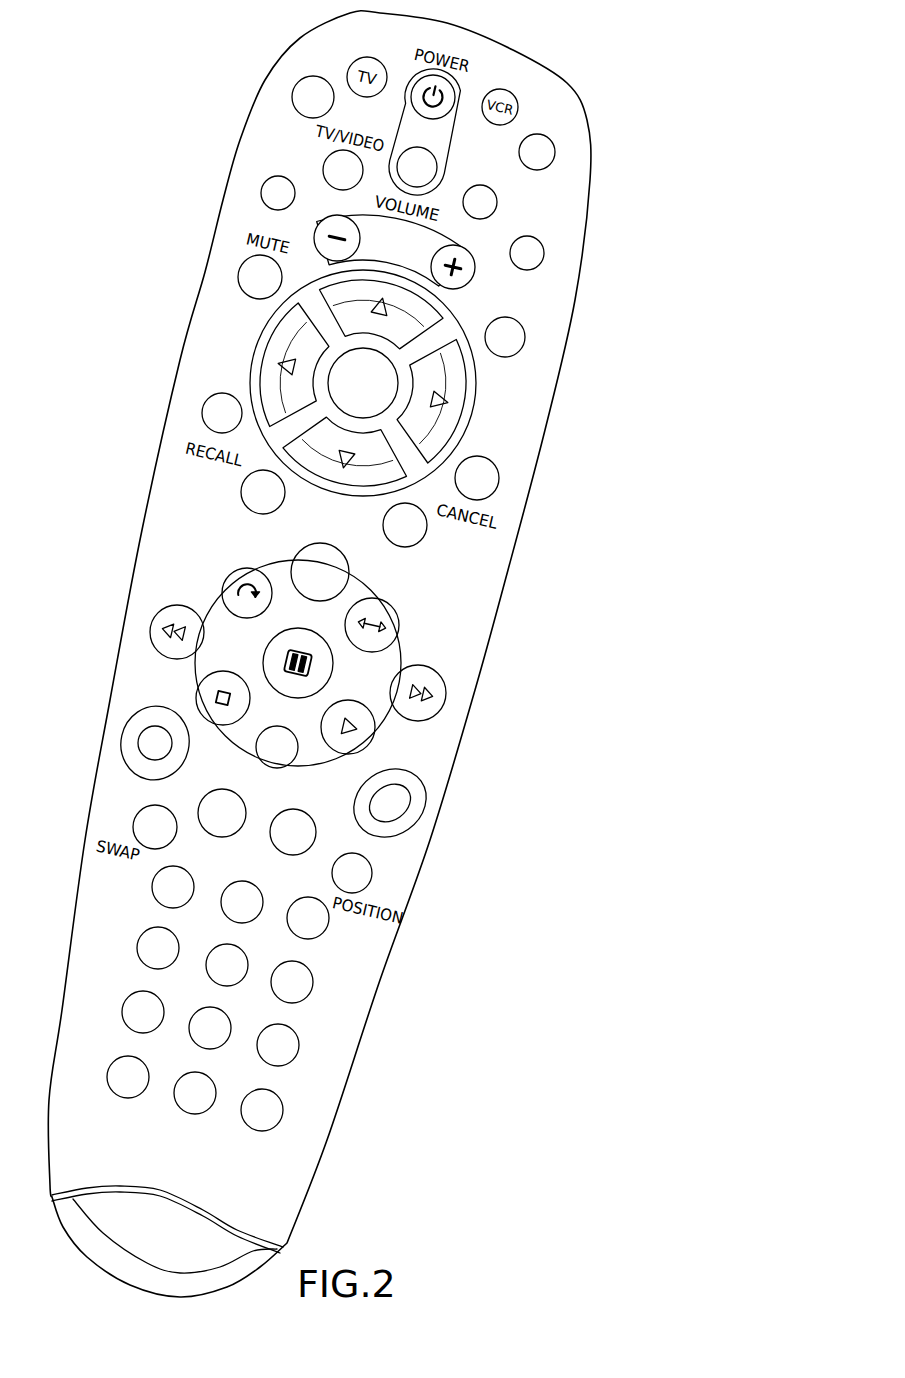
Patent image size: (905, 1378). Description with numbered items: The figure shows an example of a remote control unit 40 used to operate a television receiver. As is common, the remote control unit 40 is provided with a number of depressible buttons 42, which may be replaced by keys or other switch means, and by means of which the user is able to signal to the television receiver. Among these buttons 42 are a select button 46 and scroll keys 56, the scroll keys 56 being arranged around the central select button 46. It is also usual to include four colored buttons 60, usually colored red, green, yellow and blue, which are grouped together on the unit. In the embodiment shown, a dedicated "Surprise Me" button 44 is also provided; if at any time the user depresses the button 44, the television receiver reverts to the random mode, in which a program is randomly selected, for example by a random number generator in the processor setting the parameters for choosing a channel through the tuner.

The remote control unit 40 is at (197, 172).
The depressible buttons 42 is at (282, 1108).
The "Surprise Me" button 44 is at (317, 837).
The select button 46 is at (398, 389).
The scroll keys 56 is at (452, 438).
The colored buttons 60 is at (223, 588).